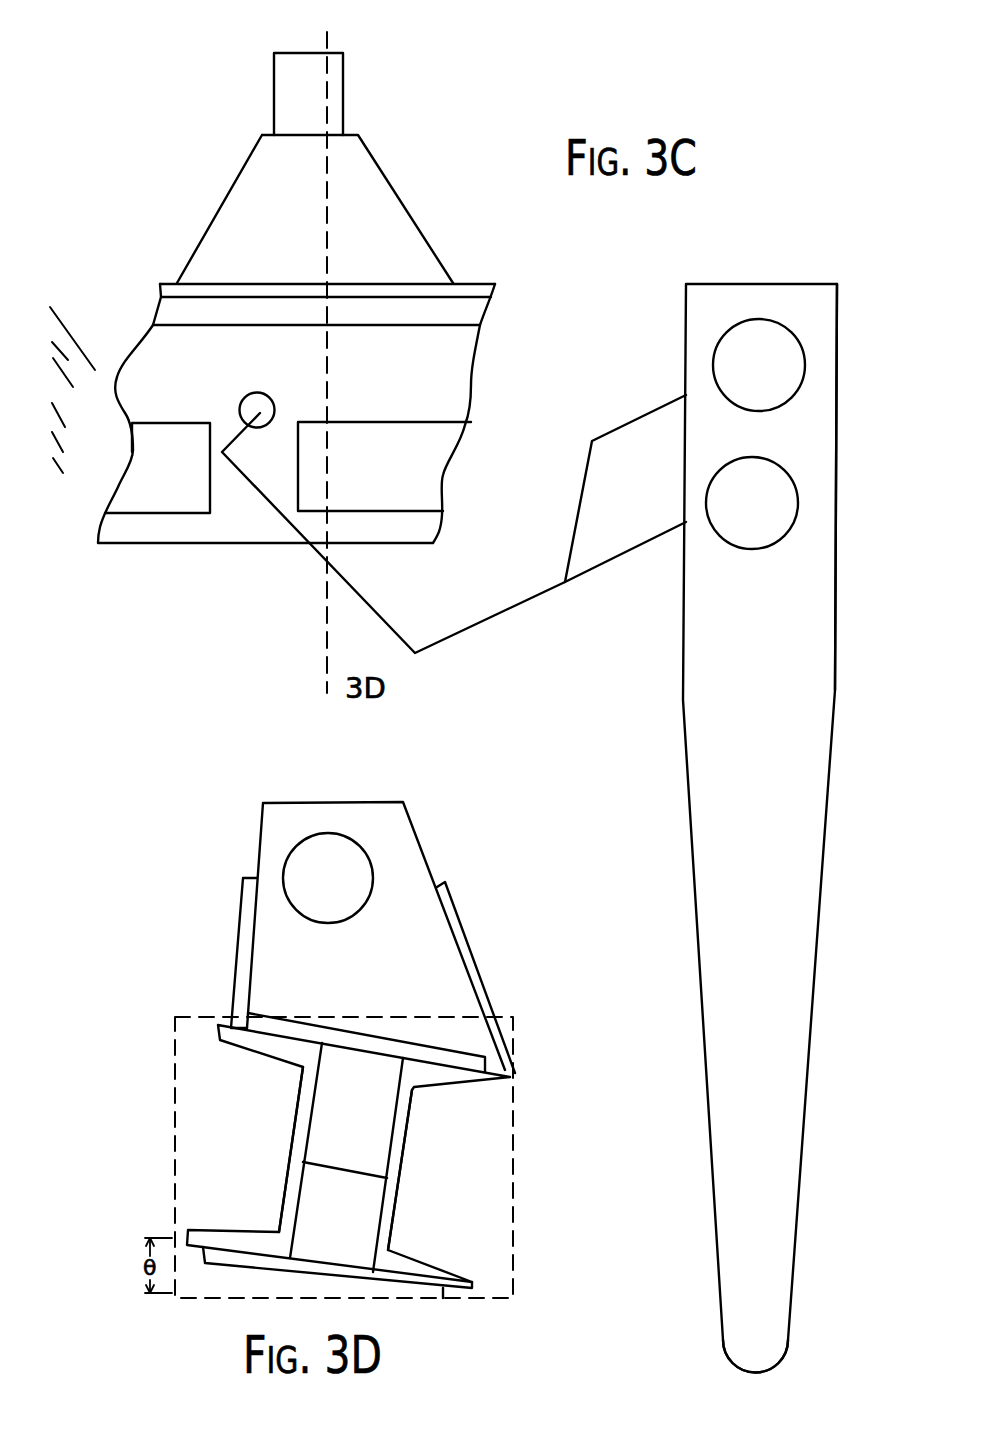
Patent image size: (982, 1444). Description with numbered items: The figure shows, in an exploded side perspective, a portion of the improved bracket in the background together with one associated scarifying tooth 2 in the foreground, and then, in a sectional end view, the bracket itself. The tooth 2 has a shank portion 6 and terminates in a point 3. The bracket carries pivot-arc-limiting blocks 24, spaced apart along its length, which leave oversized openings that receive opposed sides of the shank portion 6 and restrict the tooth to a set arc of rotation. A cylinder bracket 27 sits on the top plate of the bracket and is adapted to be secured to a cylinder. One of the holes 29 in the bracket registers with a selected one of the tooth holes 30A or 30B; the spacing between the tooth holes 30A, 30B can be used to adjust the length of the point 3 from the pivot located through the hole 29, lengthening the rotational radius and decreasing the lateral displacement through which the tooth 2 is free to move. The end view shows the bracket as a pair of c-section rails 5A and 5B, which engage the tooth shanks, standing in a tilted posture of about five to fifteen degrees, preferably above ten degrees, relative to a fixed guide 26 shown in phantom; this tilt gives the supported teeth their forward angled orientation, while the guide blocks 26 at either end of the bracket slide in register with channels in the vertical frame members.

In FIG. 3C, the tooth 2 is at (760, 828).
In FIG. 3C, the point 3 is at (777, 1367).
In FIG. 3C, the shank portion 6 is at (853, 497).
In FIG. 3C, the pivot-arc-limiting block 24 is at (288, 467).
In FIG. 3D, the pivot-arc-limiting block 24 is at (353, 1237).
In FIG. 3D, the guide block 26 is at (513, 1247).
In FIG. 3C, the cylinder bracket 27 is at (324, 189).
In FIG. 3D, the cylinder bracket 27 is at (412, 863).
In FIG. 3C, the hole 29 is at (256, 389).
In FIG. 3C, the tooth hole 30A is at (923, 271).
In FIG. 3C, the tooth hole 30B is at (905, 417).
In FIG. 3D, the c-section rail 5A is at (393, 1190).
In FIG. 3D, the c-section rail 5B is at (297, 1148).